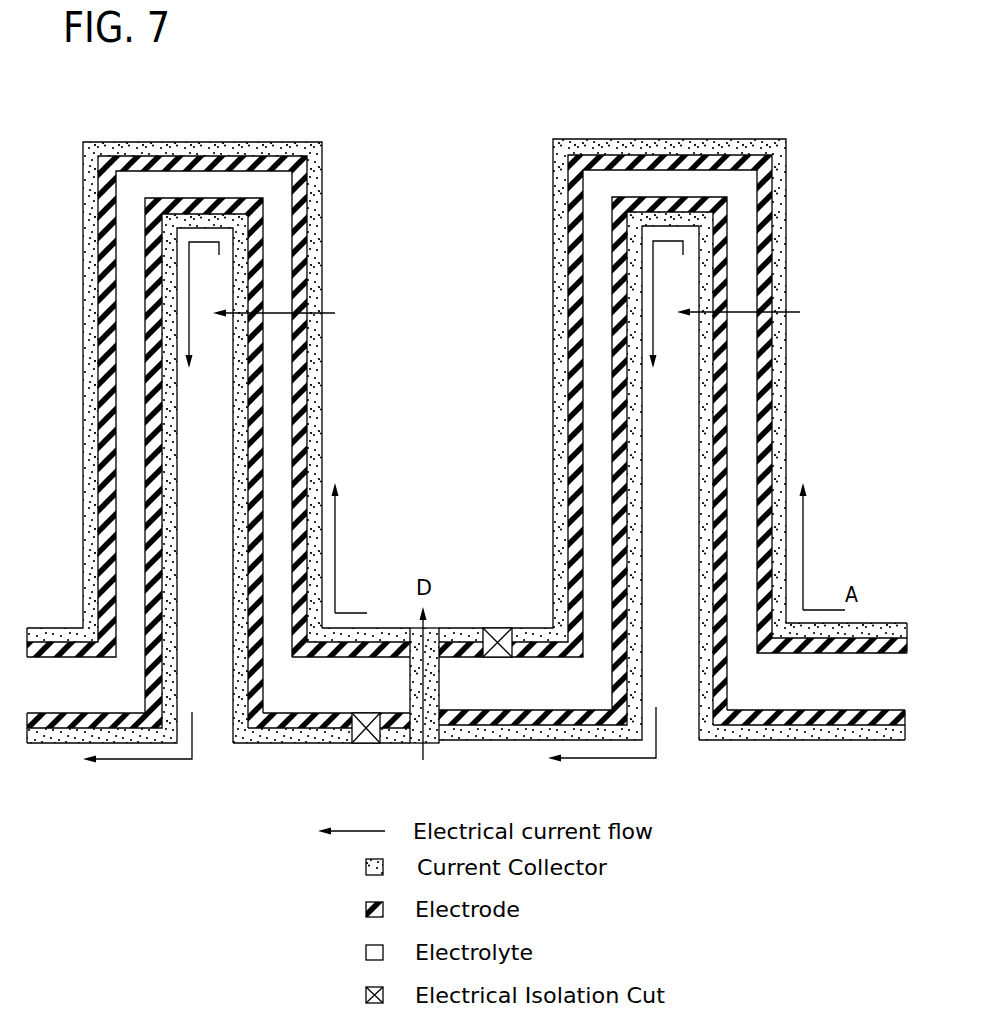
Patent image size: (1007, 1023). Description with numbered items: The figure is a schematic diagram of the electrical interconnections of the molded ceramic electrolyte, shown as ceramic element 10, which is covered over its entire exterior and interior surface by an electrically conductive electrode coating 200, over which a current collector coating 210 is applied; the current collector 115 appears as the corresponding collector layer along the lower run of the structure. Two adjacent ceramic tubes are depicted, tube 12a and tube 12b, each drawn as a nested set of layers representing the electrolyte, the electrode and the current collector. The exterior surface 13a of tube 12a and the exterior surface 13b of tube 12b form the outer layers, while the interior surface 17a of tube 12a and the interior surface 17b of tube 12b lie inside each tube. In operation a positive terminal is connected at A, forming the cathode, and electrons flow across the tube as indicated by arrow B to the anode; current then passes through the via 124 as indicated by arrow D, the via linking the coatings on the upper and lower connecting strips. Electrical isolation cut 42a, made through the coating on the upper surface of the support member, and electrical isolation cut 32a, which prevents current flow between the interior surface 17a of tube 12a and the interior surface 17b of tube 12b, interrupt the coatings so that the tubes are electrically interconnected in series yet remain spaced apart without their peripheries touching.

The ceramic element 10 is at (549, 99).
The exterior surface of tube 12b 13b is at (287, 130).
The tube 12b is at (307, 257).
The interior surface of tube 12b 17b is at (235, 458).
The exterior surface of tube 12a 13a is at (786, 218).
The tube 12a is at (720, 130).
The interior surface of tube 12a 17a is at (700, 427).
The electrode coating 200 is at (327, 657).
The via 124 is at (435, 688).
The electrical isolation cut 42a is at (495, 628).
The electrical isolation cut 32a is at (368, 743).
The current collector coating 210 is at (298, 743).
The current collector 115 is at (833, 737).